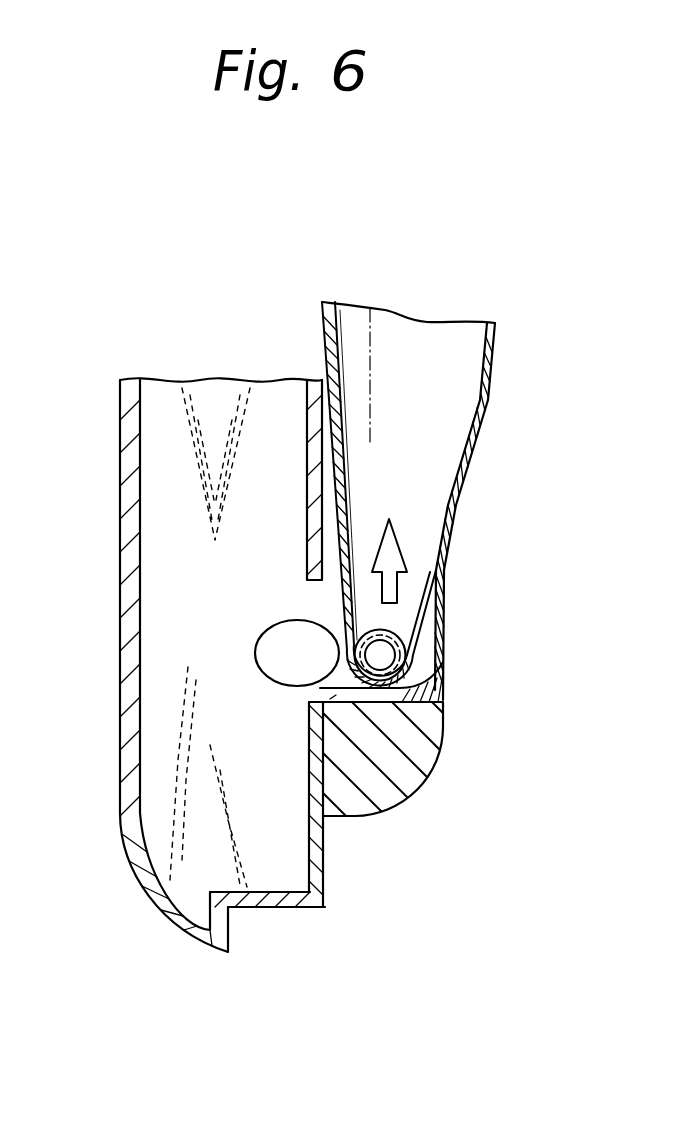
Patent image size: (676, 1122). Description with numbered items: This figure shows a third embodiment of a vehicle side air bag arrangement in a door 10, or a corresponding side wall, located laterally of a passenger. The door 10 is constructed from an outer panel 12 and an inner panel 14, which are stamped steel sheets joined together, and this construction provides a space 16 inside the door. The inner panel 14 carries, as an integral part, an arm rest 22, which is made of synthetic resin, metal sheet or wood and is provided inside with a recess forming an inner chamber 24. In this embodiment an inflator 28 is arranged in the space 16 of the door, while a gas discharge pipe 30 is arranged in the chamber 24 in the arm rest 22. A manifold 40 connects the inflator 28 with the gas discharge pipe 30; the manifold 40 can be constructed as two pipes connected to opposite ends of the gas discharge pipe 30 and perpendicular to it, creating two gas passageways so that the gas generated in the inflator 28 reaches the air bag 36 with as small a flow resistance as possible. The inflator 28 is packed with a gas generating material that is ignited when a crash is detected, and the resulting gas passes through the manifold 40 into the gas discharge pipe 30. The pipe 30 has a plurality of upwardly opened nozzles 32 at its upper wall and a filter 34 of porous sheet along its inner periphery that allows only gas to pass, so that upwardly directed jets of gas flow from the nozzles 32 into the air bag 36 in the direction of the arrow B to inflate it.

The door 10 is at (120, 523).
The outer panel 12 is at (120, 674).
The inner panel 14 is at (327, 870).
The space 16 is at (282, 862).
The arm rest 22 is at (432, 754).
The inner chamber 24 is at (410, 686).
The inflator 28 is at (273, 672).
The gas discharge pipe 30 is at (442, 615).
The nozzles 32 is at (386, 627).
The filter 34 is at (414, 658).
The air bag 36 is at (490, 400).
The manifold 40 is at (333, 704).
The arrow B is at (395, 537).